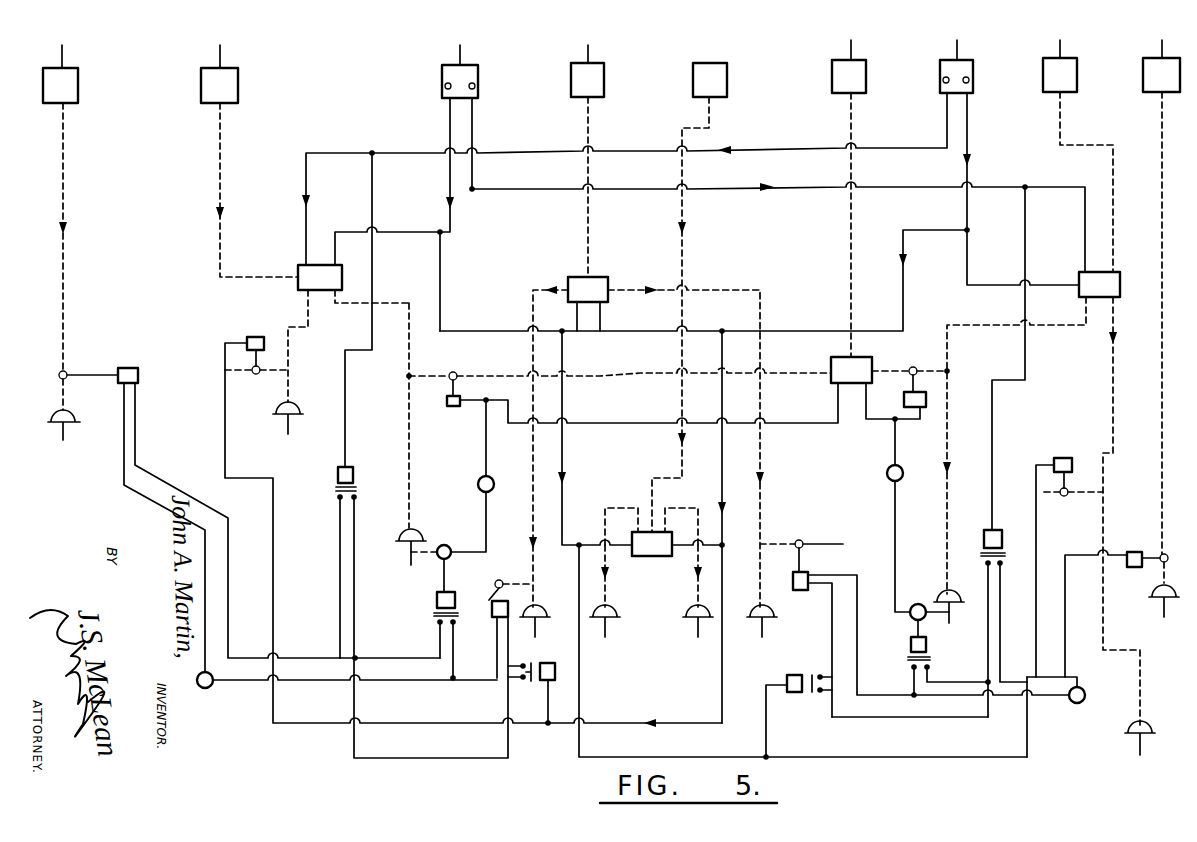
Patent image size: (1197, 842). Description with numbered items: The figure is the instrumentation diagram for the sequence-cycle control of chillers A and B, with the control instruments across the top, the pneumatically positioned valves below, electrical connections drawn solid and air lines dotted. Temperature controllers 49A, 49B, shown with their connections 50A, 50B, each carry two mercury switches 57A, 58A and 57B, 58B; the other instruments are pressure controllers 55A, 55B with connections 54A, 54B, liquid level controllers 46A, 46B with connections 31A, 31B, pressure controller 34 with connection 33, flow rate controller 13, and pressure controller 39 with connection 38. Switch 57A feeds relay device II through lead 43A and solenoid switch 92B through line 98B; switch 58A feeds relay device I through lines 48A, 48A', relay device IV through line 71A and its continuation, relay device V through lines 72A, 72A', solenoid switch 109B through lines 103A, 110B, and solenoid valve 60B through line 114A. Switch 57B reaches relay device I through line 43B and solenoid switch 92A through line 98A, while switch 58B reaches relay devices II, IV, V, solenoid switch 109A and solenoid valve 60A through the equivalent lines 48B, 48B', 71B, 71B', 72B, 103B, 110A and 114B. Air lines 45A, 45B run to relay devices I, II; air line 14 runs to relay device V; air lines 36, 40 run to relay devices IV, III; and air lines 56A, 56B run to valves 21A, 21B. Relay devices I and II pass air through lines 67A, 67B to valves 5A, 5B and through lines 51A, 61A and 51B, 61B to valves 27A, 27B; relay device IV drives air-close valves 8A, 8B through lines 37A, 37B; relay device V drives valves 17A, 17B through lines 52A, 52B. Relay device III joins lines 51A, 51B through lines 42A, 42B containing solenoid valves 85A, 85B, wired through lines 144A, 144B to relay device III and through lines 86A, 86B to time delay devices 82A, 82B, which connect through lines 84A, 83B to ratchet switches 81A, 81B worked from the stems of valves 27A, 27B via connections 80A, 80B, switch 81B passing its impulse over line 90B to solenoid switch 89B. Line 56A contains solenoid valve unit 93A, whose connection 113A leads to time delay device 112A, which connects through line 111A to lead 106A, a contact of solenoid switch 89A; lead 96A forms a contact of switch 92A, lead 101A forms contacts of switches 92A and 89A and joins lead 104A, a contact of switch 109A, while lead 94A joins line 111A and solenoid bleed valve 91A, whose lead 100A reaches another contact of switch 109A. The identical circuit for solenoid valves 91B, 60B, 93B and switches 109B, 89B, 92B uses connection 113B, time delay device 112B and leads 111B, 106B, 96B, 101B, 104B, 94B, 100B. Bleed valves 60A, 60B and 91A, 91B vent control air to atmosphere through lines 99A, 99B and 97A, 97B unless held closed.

The pressure controller input line 54A is at (58, 56).
The pressure controller 55A is at (78, 92).
The liquid level controller input line 31A is at (224, 60).
The liquid level controller 46A is at (208, 70).
The air line 56A is at (66, 194).
The air line 45A is at (219, 172).
The line 43B is at (308, 152).
The line 98A is at (371, 184).
The line 48A is at (394, 181).
The line 48A' is at (416, 269).
The mercury switch 58A is at (444, 84).
The temperature controller 49A is at (476, 84).
The mercury switch 57A is at (476, 88).
The temperature controller 50A is at (410, 52).
The lead 43A is at (474, 128).
The pressure controller input 33 is at (589, 57).
The pressure controller 34 is at (573, 63).
The air line 36 is at (590, 232).
The flow rate controller 13 is at (704, 63).
The air line 14 is at (684, 224).
The pressure controller input 38 is at (853, 50).
The pressure controller 39 is at (838, 60).
The temperature controller 49B is at (943, 60).
The temperature controller 50B is at (935, 40).
The mercury switch 57B is at (944, 82).
The mercury switch 58B is at (972, 86).
The mercury switch lead 48B is at (1021, 189).
The mercury switch lead branch 48B' is at (945, 264).
The liquid level controller input line 31B is at (1058, 46).
The liquid level controller 46B is at (1065, 60).
The pressure controller input line 54B is at (1160, 48).
The pressure controller 55B is at (1150, 92).
The air line 45B is at (1060, 152).
The air line 56B is at (1160, 182).
The line 98B is at (1024, 218).
The air line 40 is at (850, 228).
The conductor 71B is at (863, 280).
The line 37A is at (536, 292).
The line 37B is at (733, 286).
The line 71A is at (482, 331).
The conductor branch 71B' is at (707, 319).
The air line 67A is at (308, 328).
The solenoid valve 60A is at (255, 336).
The solenoid valve unit 93A is at (128, 368).
The conductor 114B is at (220, 370).
The line 99A is at (268, 373).
The valve 5A is at (290, 410).
The valve 21A is at (51, 416).
The lead 96A is at (136, 428).
The electric connection 113A is at (122, 466).
The line 61A is at (408, 419).
The line 51A is at (410, 296).
The solenoid valve 85A is at (453, 372).
The line 86A is at (482, 452).
The time delay device 82A is at (478, 480).
The solenoid switch 92A is at (336, 466).
The line 72A is at (595, 439).
The line 72A' is at (585, 526).
The conductor 72B is at (722, 474).
The air line 52A is at (610, 508).
The air line 52B is at (693, 508).
The line 42A is at (794, 368).
The line 42B is at (890, 372).
The line 144A is at (810, 422).
The conductor 144B is at (876, 420).
The solenoid valve 85B is at (916, 368).
The line 51B is at (948, 342).
The line 61B is at (947, 454).
The conductor 86B is at (898, 450).
The time delay device 82B is at (886, 474).
The conductor 83B is at (854, 545).
The air line 67B is at (1112, 370).
The line 114A is at (1036, 438).
The solenoid valve 60B is at (1070, 456).
The switch 99B is at (1076, 494).
The solenoid switch 92B is at (984, 532).
The solenoid valve 93B is at (1134, 551).
The valve 27A is at (404, 532).
The ratchet switch 81A is at (442, 544).
The line 84A is at (487, 510).
The valve control line 80A is at (410, 548).
The line 97A is at (494, 582).
The air close valve 8A is at (537, 610).
The solenoid switch 89A is at (436, 600).
The solenoid bleed valve 91A is at (492, 596).
The valve 17A is at (612, 610).
The valve 17B is at (692, 612).
The air close valve 8B is at (760, 612).
The line 97B is at (826, 542).
The conductor 94B is at (845, 574).
The solenoid valve 91B is at (804, 590).
The ratchet switch 81B is at (916, 604).
The valve 27B is at (950, 596).
The valve control line 80B is at (948, 620).
The conductor 90B is at (914, 626).
The solenoid switch 89B is at (926, 643).
The conductor 96B is at (1001, 634).
The conductor 100B is at (830, 626).
The conductor junction 106B is at (908, 684).
The conductor 101B is at (962, 668).
The conductor 113B is at (1072, 676).
The solenoid switch 109B is at (790, 674).
The motor 112B is at (1079, 694).
The conductor 111B is at (1056, 698).
The valve 5B is at (1142, 728).
The valve 21B is at (1157, 594).
The lead 106A is at (440, 676).
The lead 100A is at (509, 660).
The solenoid switch 109A is at (542, 680).
The conductor 110A is at (548, 710).
The line 103A is at (580, 670).
The conductor 103B is at (720, 695).
The lead 101A is at (378, 654).
The time delay device 112A is at (210, 688).
The line 111A is at (316, 682).
The lead 104A is at (435, 758).
The lead 94A is at (477, 680).
The line 110B is at (767, 726).
The conductor 104B is at (907, 722).
The relay device I is at (320, 277).
The relay device II is at (1099, 284).
The relay device III is at (851, 370).
The relay device IV is at (588, 304).
The relay device V is at (652, 544).